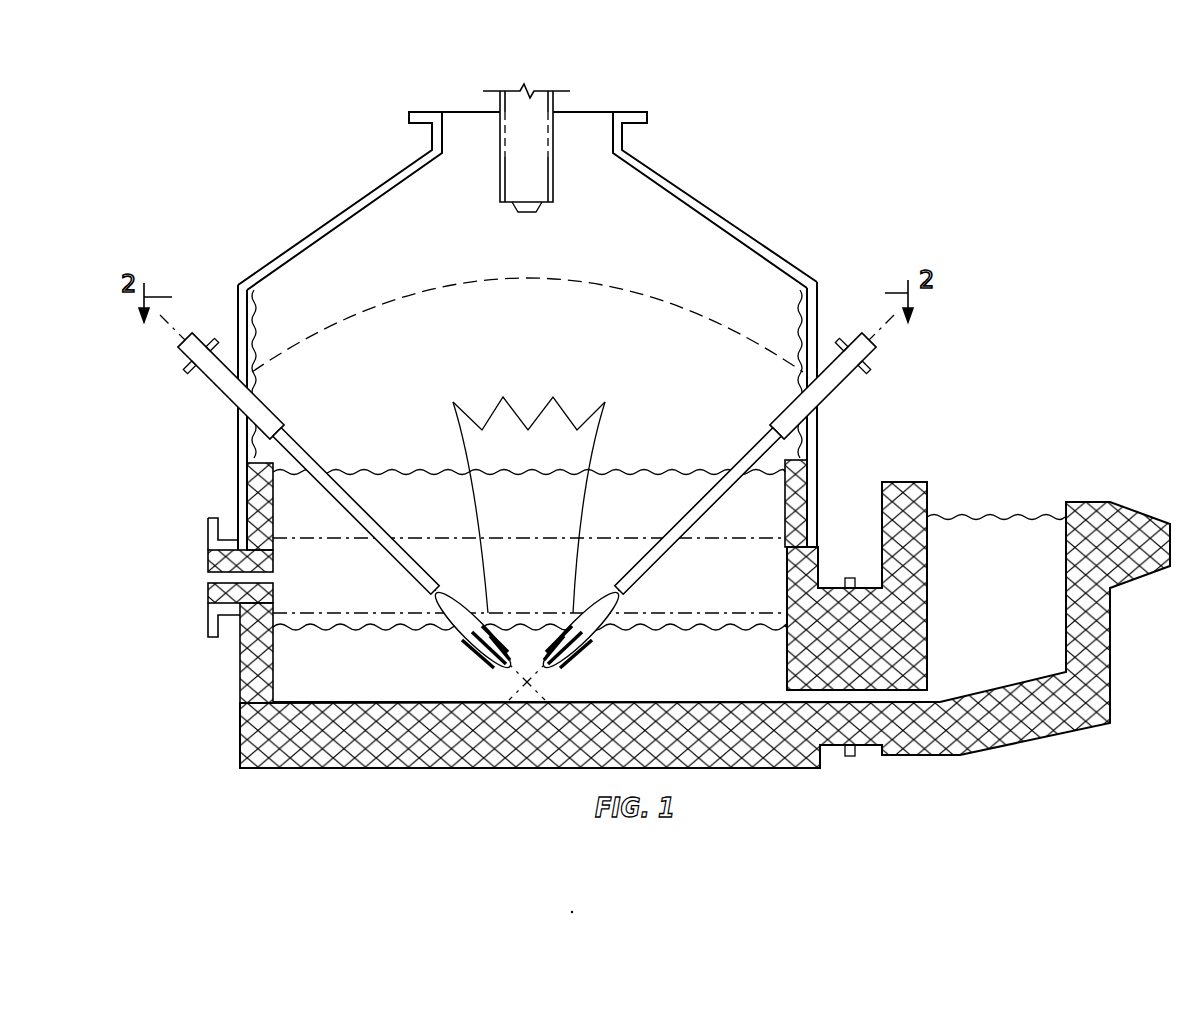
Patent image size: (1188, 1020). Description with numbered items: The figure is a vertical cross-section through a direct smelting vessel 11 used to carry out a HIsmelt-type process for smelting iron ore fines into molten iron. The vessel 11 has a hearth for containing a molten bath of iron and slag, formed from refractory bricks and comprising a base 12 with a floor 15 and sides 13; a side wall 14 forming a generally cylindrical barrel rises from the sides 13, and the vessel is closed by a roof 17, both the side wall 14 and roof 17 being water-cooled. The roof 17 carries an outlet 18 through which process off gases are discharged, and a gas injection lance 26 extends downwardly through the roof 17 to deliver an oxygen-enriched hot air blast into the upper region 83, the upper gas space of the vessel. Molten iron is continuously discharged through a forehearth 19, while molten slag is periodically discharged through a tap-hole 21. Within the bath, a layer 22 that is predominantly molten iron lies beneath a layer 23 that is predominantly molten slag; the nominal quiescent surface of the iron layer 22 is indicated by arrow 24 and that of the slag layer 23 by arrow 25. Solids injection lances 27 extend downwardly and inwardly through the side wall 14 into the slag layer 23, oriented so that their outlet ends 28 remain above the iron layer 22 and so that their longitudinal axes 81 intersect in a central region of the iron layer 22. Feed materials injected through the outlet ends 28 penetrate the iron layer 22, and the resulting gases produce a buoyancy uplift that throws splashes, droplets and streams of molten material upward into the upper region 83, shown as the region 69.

The direct smelting vessel 11 is at (222, 262).
The base 12 is at (287, 738).
The sides 13 is at (255, 648).
The side wall 14 is at (248, 462).
The floor 15 is at (732, 700).
The roof 17 is at (340, 220).
The outlet 18 is at (466, 126).
The forehearth 19 is at (1001, 588).
The tap-hole 21 is at (208, 578).
The iron layer 22 is at (361, 675).
The slag layer 23 is at (361, 592).
The quiescent surface of the iron layer 24 is at (556, 611).
The quiescent surface of the slag layer 25 is at (556, 536).
The gas injection lance 26 is at (536, 173).
The solids injection lances 27 is at (183, 345).
The outlet ends 28 is at (440, 591).
The region of upward movement 69 is at (560, 405).
The longitudinal axes 81 is at (780, 414).
The upper region 83 is at (408, 270).